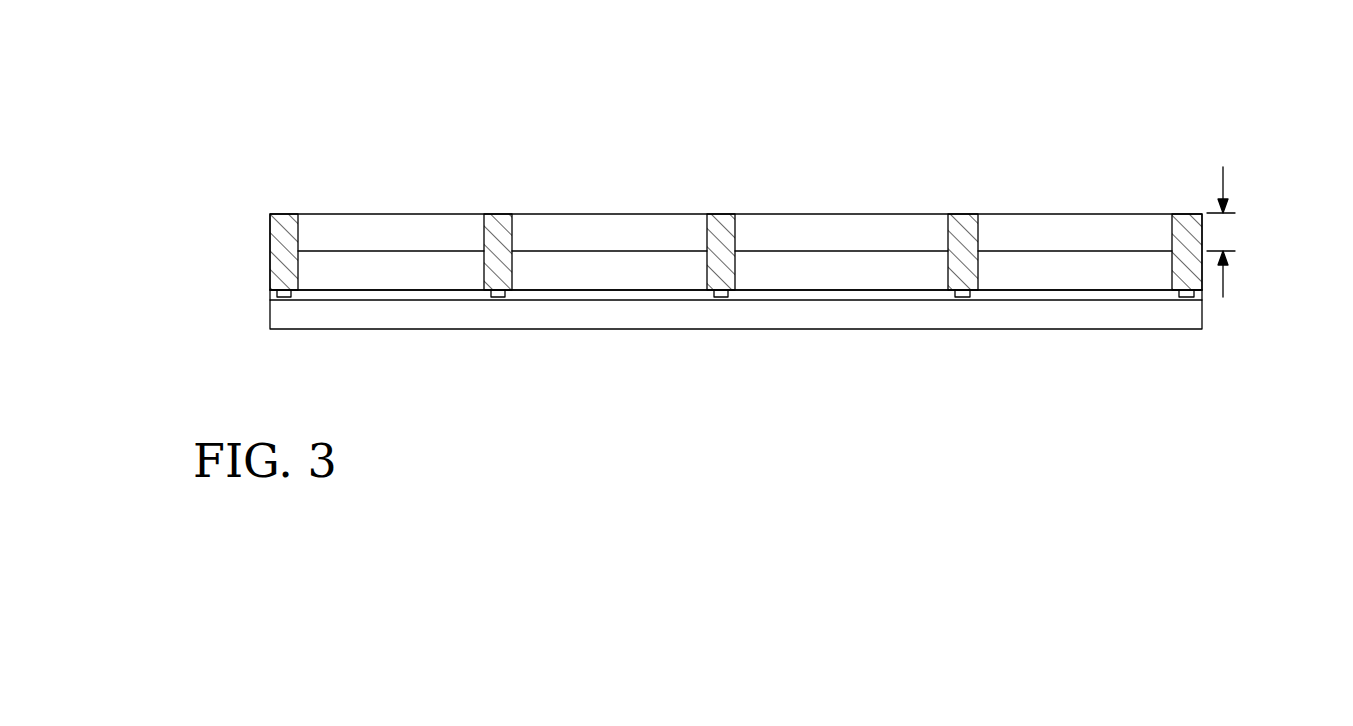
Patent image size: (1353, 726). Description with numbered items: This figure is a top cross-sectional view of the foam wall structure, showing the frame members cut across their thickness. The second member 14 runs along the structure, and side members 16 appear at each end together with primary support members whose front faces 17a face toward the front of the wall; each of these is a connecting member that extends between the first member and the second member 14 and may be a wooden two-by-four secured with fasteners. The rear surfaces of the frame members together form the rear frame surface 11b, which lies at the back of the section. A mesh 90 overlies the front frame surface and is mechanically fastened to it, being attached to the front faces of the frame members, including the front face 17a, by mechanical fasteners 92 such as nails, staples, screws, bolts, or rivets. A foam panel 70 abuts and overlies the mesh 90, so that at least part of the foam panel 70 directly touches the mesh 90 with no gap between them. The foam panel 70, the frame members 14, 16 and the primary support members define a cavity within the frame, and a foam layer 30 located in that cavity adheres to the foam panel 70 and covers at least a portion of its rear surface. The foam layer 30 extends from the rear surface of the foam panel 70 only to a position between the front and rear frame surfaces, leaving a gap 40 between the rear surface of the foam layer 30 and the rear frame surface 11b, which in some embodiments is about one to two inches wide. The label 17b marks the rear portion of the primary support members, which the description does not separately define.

The rear frame surface 11b is at (303, 126).
The second member 14 is at (808, 213).
The side member 16 is at (281, 213).
The front face of primary support member 17a is at (291, 295).
The intermediate spacer block 17b is at (497, 213).
The foam layer 30 is at (362, 250).
The gap 40 is at (1222, 237).
The foam panel 70 is at (405, 329).
The mesh 90 is at (274, 293).
The mechanical fasteners 92 is at (283, 297).